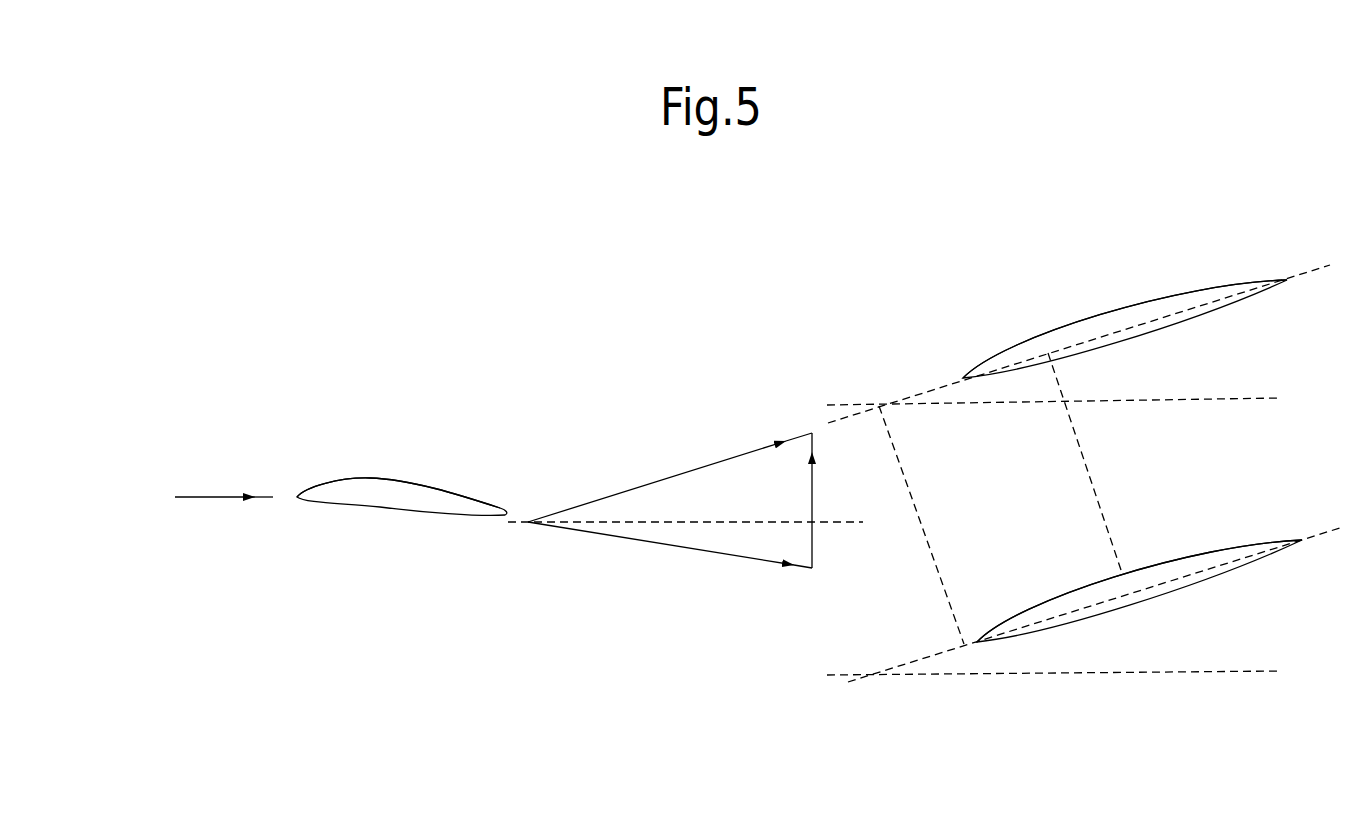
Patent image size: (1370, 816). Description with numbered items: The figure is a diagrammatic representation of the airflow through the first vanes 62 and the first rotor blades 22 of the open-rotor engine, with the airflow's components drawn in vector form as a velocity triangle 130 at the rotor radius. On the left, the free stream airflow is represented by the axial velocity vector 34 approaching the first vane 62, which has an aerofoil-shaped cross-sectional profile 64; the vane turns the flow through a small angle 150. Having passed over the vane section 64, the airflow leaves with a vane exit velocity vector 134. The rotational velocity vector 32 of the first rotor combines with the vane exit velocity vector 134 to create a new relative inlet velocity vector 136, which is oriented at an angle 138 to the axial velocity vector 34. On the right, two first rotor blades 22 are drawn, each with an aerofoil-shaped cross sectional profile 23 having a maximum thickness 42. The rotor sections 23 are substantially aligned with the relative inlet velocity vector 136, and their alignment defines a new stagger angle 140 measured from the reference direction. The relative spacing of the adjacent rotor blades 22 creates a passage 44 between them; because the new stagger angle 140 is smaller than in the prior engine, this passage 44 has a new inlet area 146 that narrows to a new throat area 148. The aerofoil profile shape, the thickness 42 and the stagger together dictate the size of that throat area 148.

The first rotor blade 22 is at (1127, 303).
The aerofoil-shaped cross sectional profile 23 is at (1151, 308).
The rotational velocity vector 32 is at (833, 500).
The axial velocity vector 34 is at (207, 497).
The maximum thickness 42 is at (1105, 398).
The passage 44 is at (1155, 452).
The first vane 62 is at (318, 481).
The aerofoil-shaped cross-sectional profile 64 is at (371, 484).
The velocity triangle 130 is at (685, 505).
The vane exit velocity vector 134 is at (670, 554).
The relative inlet velocity vector 136 is at (670, 477).
The angle 138 is at (556, 513).
The new stagger angle 140 is at (938, 394).
The new inlet area 146 is at (921, 525).
The throat area 148 is at (1081, 463).
The small angle 150 is at (603, 529).